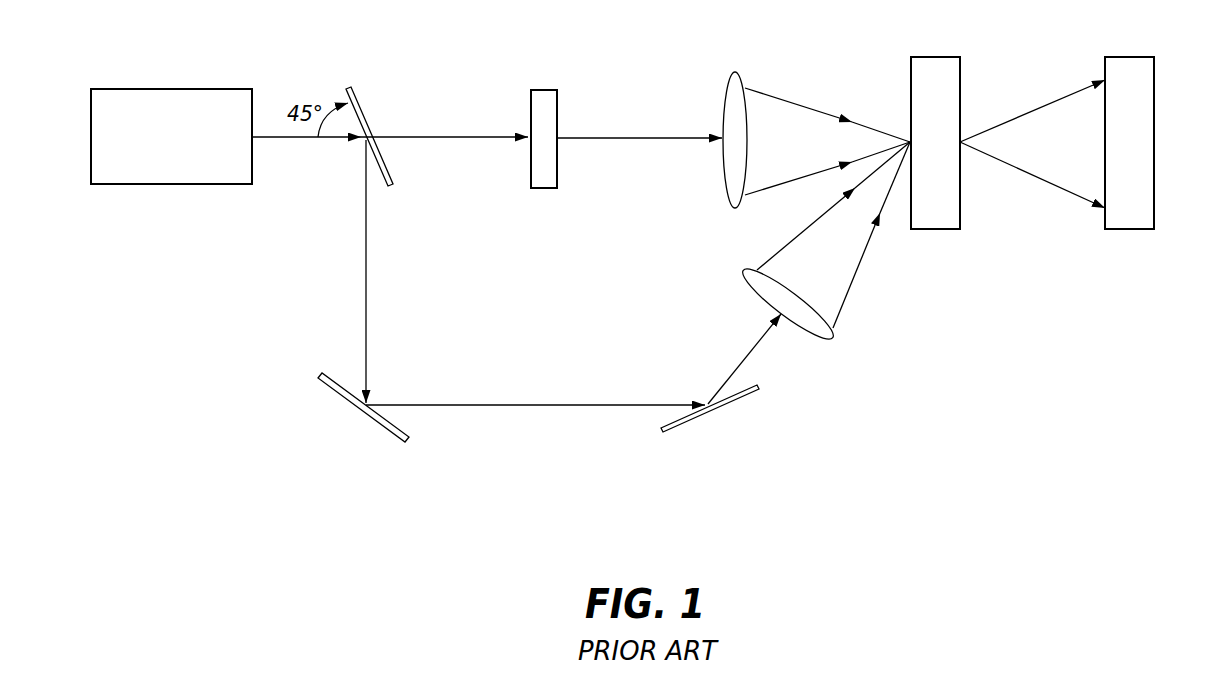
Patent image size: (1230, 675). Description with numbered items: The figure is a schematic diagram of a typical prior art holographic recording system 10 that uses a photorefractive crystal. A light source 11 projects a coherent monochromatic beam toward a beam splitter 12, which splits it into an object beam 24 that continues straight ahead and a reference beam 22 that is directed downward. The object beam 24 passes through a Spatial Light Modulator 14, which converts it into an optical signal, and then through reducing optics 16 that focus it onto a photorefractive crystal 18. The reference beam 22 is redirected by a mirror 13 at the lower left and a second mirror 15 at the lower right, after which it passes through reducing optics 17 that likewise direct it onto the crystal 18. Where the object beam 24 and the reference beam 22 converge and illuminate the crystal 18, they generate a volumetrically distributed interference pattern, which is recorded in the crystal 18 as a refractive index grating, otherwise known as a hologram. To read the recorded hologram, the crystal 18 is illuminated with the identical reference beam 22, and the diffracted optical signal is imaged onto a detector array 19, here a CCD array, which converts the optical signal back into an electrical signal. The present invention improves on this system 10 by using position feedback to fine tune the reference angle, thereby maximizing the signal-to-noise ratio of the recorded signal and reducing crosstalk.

The system 10 is at (528, 538).
The light source 11 is at (163, 184).
The beam splitter 12 is at (348, 88).
The mirror 13 is at (407, 440).
The Spatial Light Modulator 14 is at (546, 90).
The mirror 15 is at (758, 387).
The reducing optics 16 is at (737, 73).
The reducing optics 17 is at (752, 290).
The photorefractive crystal 18 is at (940, 57).
The detector array 19 is at (1154, 80).
The reference beam 22 is at (366, 290).
The object beam 24 is at (422, 138).